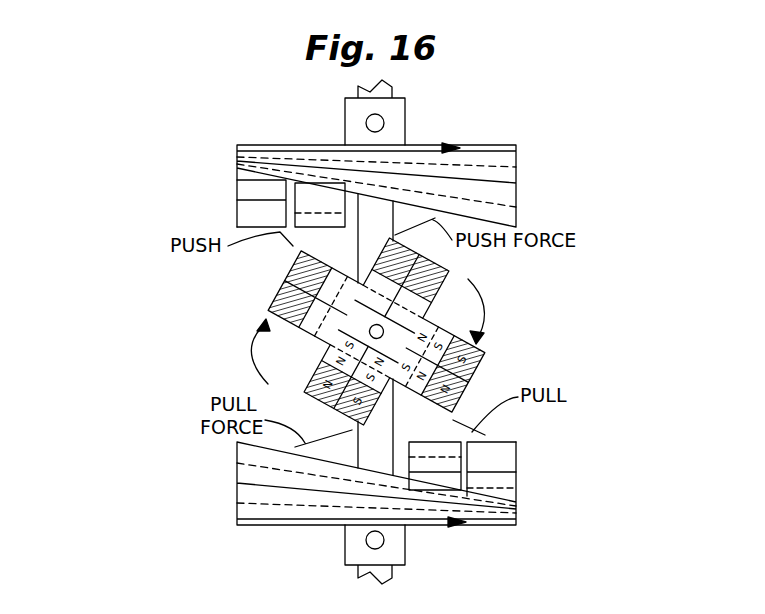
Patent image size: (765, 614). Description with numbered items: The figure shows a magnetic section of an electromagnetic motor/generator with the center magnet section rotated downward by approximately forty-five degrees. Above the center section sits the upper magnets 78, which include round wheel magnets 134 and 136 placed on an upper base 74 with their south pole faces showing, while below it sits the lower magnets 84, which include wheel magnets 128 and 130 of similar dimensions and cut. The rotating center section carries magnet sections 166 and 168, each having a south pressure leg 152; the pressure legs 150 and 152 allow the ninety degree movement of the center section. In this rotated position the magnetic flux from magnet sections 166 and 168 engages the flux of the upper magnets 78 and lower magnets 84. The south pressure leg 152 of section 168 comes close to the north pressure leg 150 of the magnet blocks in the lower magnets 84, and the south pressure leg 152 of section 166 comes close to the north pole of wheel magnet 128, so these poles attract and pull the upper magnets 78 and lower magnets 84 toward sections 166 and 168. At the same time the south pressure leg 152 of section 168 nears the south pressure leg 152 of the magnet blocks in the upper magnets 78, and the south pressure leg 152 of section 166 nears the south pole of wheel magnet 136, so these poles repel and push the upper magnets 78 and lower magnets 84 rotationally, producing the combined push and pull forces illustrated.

The upper base 74 is at (286, 145).
The upper magnets 78 is at (228, 145).
The round magnet 134 is at (517, 168).
The round magnet 136 is at (517, 210).
The wheel magnet 128 is at (237, 462).
The wheel magnet 130 is at (237, 488).
The lower magnets 84 is at (530, 442).
The pressure leg 152 is at (385, 254).
The pressure leg 150 is at (443, 327).
The magnet section 166 is at (449, 274).
The magnet section 168 is at (283, 296).